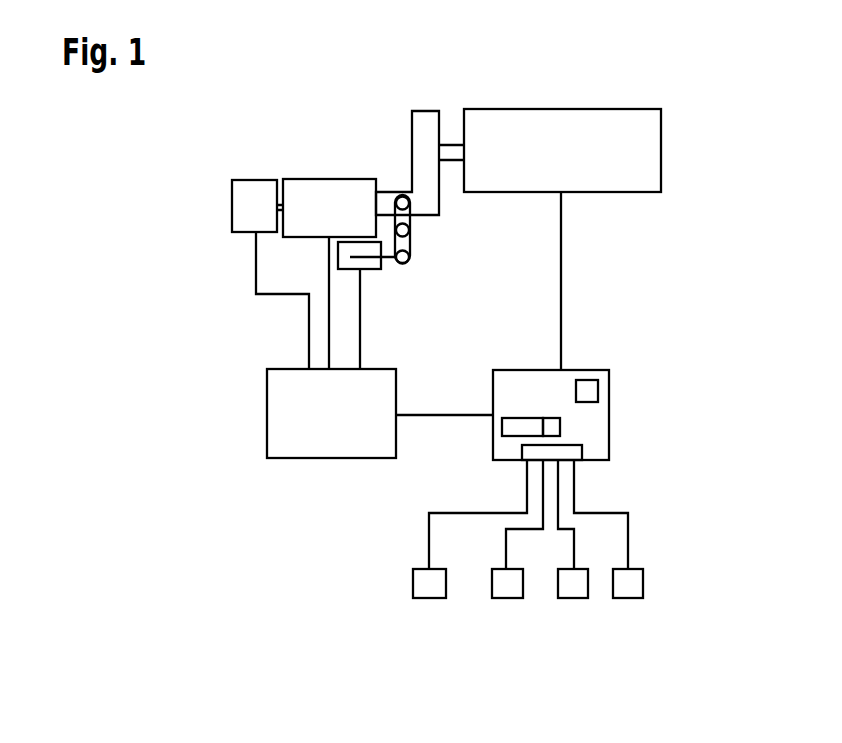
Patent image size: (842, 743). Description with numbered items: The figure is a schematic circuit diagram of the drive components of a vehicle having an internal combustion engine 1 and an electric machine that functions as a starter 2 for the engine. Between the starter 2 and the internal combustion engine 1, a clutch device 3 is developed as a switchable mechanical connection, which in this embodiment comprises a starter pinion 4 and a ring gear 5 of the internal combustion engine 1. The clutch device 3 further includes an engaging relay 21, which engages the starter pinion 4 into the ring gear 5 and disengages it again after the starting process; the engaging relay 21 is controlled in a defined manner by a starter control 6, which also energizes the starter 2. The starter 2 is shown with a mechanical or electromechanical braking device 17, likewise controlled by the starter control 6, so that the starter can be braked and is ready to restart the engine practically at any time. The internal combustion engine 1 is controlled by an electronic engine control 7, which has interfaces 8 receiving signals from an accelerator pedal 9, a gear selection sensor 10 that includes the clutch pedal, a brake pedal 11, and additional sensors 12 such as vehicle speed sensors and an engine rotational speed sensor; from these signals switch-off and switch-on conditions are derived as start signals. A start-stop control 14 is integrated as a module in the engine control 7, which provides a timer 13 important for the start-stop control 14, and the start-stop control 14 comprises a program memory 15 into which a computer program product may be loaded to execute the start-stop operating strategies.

The internal combustion engine 1 is at (650, 153).
The starter 2 is at (328, 188).
The clutch device 3 is at (400, 100).
The starter pinion 4 is at (410, 193).
The ring gear 5 is at (428, 127).
The starter control 6 is at (277, 425).
The engine control 7 is at (553, 392).
The interfaces 8 is at (572, 450).
The accelerator pedal 9 is at (425, 590).
The gear selection sensor 10 is at (508, 590).
The brake pedal 11 is at (576, 590).
The sensor 12 is at (632, 590).
The timer 13 is at (585, 390).
The start-stop control 14 is at (513, 430).
The program memory 15 is at (552, 427).
The braking device 17 is at (258, 195).
The engaging relay 21 is at (373, 263).